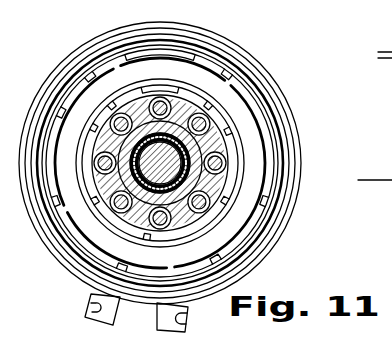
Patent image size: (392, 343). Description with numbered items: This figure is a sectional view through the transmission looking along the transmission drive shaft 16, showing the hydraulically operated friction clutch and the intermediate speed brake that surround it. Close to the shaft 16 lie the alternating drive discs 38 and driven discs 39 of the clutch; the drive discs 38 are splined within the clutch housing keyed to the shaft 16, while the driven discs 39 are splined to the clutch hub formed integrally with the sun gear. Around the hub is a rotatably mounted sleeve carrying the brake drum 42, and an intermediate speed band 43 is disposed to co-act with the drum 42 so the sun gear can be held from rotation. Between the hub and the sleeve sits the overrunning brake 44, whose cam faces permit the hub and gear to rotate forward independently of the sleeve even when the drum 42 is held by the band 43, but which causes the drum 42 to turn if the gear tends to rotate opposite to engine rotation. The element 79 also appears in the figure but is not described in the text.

The hub 16 is at (205, 200).
The retaining ring 38 is at (236, 100).
The spring ring 39 is at (211, 63).
The housing ring 42 is at (288, 153).
The outer housing 43 is at (60, 70).
The bolt 44 is at (208, 130).
The adjacent member 79 is at (391, 204).